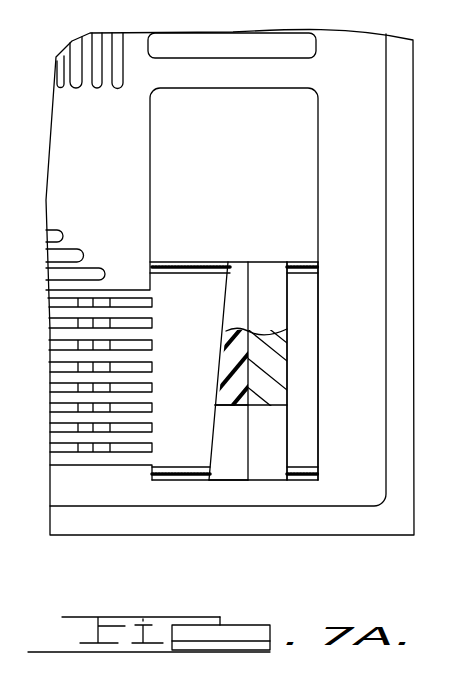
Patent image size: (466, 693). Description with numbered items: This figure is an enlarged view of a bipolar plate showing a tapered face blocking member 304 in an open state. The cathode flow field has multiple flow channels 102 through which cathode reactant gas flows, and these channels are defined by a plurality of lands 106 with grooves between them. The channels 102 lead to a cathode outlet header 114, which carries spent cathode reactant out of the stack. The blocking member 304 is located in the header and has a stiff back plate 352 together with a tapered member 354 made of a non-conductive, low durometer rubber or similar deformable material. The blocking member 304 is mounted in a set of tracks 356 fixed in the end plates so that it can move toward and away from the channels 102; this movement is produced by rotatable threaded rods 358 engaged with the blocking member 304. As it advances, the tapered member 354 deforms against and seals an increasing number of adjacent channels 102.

The flow channels 102 is at (163, 381).
The lands 106 is at (118, 408).
The cathode outlet header 114 is at (303, 297).
The blocking member 304 is at (303, 334).
The back plate 352 is at (271, 422).
The tapered member 354 is at (227, 457).
The tracks 356 is at (221, 262).
The threaded rods 358 is at (180, 262).